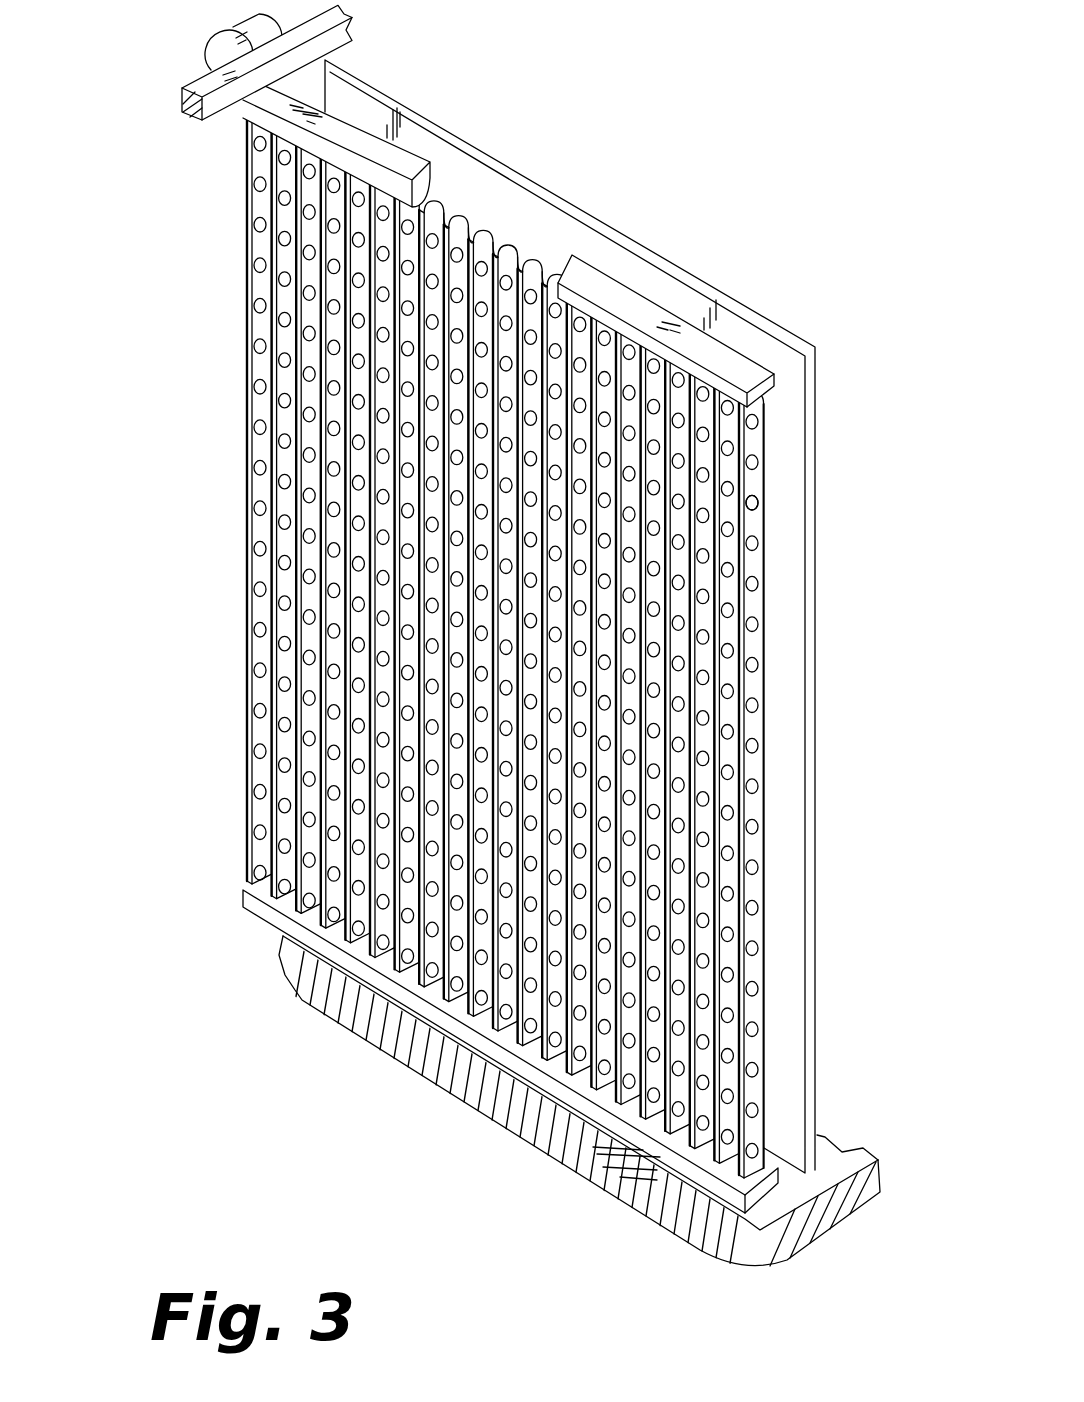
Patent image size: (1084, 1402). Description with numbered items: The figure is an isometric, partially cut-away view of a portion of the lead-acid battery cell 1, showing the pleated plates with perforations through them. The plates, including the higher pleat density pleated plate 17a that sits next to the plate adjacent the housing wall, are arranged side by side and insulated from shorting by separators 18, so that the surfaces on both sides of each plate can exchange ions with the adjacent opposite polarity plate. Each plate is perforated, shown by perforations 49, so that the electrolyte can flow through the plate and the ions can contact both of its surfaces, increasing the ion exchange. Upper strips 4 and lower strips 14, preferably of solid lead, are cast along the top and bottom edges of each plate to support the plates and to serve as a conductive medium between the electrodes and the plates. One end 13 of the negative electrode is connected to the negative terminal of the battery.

The lead-acid battery cell 1 is at (502, 636).
The upper strips 4 is at (620, 302).
The end of the negative electrode 13 is at (200, 87).
The lower strips 14 is at (572, 1090).
The pleated plate 17a is at (243, 700).
The separators 18 is at (789, 610).
The perforations 49 is at (759, 506).